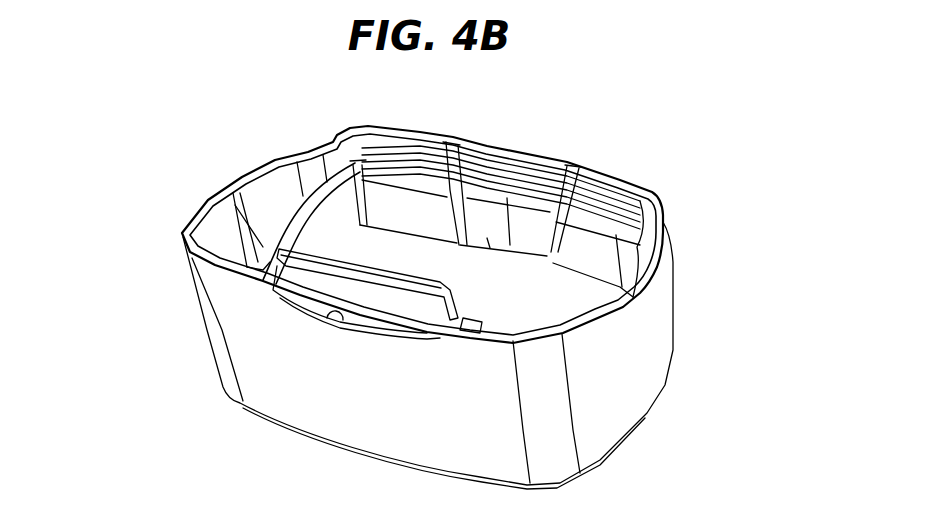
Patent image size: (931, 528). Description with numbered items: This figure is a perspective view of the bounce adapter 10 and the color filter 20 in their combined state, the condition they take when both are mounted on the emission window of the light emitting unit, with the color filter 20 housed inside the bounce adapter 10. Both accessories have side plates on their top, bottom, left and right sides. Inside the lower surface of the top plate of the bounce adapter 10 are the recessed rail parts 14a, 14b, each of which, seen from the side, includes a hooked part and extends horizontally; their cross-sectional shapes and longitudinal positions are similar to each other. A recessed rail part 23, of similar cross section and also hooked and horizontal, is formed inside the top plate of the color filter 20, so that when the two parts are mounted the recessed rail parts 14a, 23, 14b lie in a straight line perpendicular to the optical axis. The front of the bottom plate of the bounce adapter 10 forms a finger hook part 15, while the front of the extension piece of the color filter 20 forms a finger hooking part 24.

The bounce adapter 10 is at (178, 232).
The color filter 20 is at (279, 210).
The recessed rail part 14a is at (407, 153).
The recessed rail part 14b is at (607, 200).
The recessed rail part 23 is at (515, 180).
The finger hooking part 24 is at (366, 312).
The finger hook part 15 is at (312, 316).